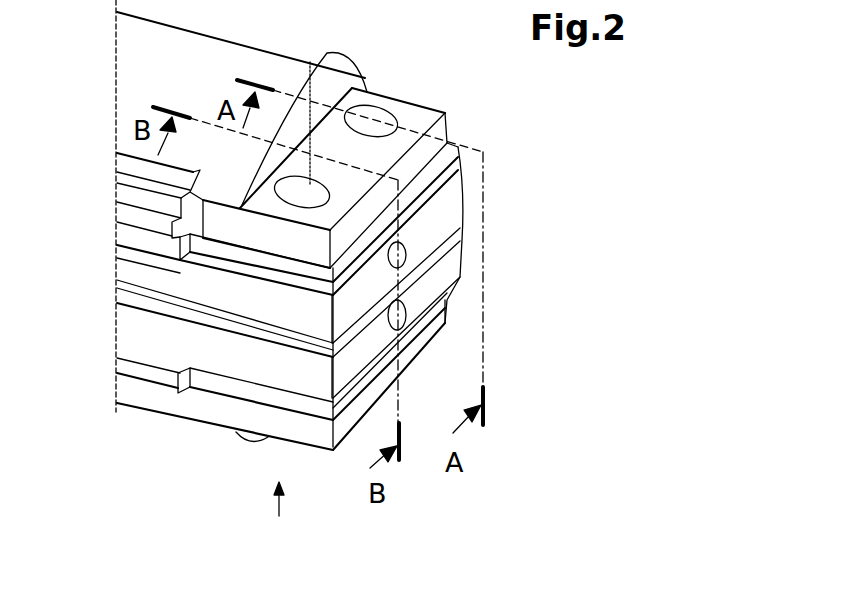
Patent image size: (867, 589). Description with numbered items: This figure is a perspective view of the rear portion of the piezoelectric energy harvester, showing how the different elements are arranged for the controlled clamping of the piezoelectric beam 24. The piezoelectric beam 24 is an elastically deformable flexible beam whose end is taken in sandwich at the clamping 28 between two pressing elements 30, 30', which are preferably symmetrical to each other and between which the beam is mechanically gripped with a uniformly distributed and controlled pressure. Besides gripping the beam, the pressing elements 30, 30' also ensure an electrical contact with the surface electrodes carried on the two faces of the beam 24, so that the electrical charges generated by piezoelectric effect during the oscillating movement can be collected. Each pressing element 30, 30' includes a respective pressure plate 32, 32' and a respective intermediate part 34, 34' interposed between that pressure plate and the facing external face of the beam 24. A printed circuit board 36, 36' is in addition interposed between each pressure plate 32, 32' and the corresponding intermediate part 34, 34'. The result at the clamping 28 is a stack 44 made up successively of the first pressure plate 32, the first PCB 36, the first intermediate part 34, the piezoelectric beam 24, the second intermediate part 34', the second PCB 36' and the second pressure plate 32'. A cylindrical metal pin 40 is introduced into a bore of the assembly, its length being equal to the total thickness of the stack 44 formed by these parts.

The piezoelectric beam 24 is at (313, 351).
The clamping 28 is at (279, 516).
The pressing element 30 is at (483, 216).
The pressing element 30' is at (487, 341).
The pressure plate 32 is at (378, 178).
The pressure plate 32' is at (340, 375).
The intermediate part 34 is at (446, 263).
The intermediate part 34' is at (450, 319).
The printed circuit board 36 is at (225, 306).
The printed circuit board 36' is at (225, 427).
The pin 40 is at (378, 114).
The stack 44 is at (628, 150).